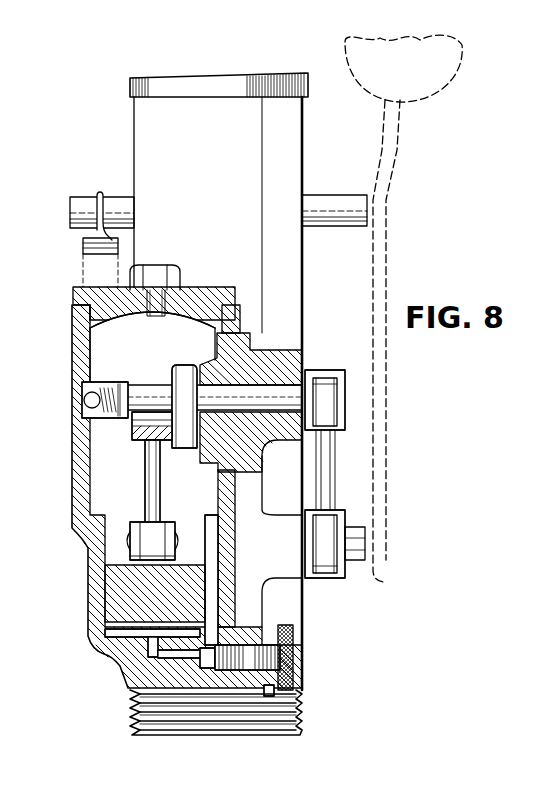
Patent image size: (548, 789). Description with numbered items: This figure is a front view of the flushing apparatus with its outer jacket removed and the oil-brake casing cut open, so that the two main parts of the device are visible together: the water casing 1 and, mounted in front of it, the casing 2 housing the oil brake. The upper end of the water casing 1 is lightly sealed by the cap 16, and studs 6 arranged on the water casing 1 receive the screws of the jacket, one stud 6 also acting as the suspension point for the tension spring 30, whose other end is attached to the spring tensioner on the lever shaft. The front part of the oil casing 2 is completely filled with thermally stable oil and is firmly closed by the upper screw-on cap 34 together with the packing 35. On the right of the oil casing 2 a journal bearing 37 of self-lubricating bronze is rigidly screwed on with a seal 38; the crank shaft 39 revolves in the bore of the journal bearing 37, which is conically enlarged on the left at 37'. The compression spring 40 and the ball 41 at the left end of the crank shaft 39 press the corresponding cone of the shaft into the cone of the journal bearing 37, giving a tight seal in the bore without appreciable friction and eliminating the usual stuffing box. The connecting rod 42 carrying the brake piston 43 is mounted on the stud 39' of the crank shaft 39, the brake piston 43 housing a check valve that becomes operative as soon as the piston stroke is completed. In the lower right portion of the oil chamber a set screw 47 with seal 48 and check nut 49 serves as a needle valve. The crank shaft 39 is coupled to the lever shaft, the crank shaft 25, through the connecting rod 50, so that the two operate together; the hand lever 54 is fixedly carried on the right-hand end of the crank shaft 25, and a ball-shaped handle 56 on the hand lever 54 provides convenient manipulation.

The water casing 1 is at (165, 148).
The casing housing an oil brake 2 is at (80, 506).
The stud 6 is at (84, 213).
The cap 16 is at (182, 80).
The crank shaft 25 is at (362, 548).
The tension spring 30 is at (98, 242).
The screw-on cap 34 is at (100, 300).
The packing 35 is at (88, 305).
The journal bearing 37 is at (267, 402).
The conical enlargement of journal bearing bore 37' is at (186, 397).
The seal 38 is at (241, 325).
The crank shaft 39 is at (335, 464).
The stud of crank shaft 39' is at (104, 428).
The compression spring 40 is at (92, 390).
The ball 41 is at (84, 402).
The connecting rod 42 is at (150, 482).
The brake piston 43 is at (140, 585).
The set screw 47 is at (270, 655).
The seal 48 is at (293, 672).
The check nut 49 is at (276, 690).
The connecting rod 50 is at (326, 400).
The hand lever 54 is at (376, 252).
The ball-shaped handle 56 is at (412, 62).